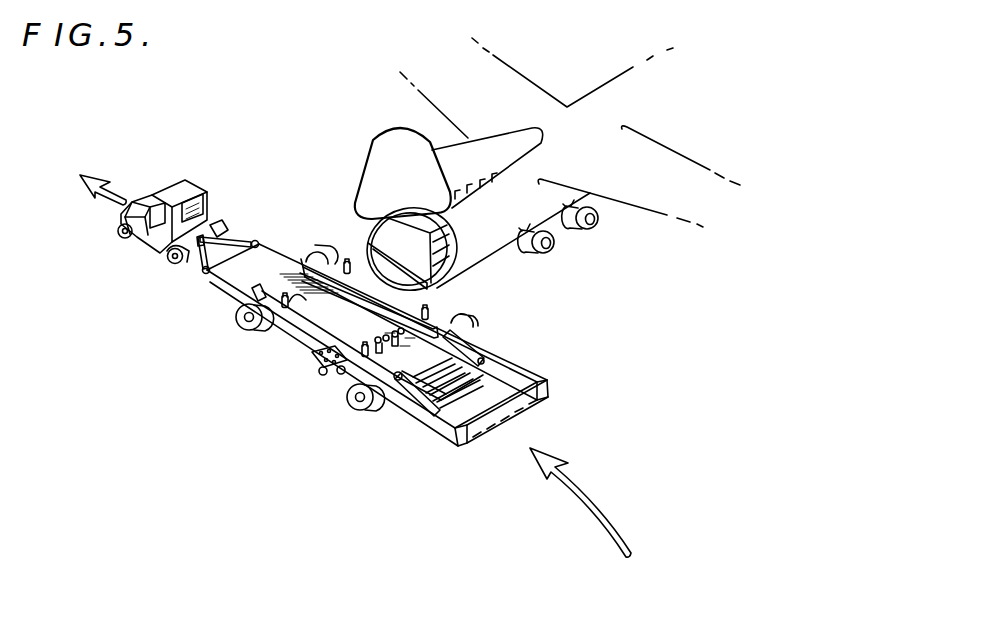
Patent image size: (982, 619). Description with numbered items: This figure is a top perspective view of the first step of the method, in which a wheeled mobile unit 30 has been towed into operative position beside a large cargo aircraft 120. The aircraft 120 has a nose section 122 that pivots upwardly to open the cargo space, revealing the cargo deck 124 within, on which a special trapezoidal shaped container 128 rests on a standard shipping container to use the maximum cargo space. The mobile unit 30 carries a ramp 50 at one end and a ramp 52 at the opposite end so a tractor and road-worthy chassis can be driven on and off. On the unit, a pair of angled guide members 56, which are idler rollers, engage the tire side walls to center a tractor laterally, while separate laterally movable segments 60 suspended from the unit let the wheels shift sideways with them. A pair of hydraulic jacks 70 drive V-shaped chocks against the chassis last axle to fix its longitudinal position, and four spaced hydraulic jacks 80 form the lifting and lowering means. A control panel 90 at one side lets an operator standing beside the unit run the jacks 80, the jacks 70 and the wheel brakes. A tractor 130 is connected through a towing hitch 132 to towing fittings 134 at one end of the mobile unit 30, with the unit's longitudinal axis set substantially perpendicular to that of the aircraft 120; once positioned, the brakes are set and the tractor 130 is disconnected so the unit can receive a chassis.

The mobile unit 30 is at (292, 341).
The ramp 50 is at (505, 400).
The ramp 52 is at (270, 278).
The guide members 56 is at (462, 352).
The segments 60 is at (440, 382).
The hydraulic jacks 70 is at (377, 340).
The hydraulic jacks 80 is at (305, 306).
The control panel 90 is at (317, 358).
The cargo aircraft 120 is at (496, 262).
The nose section 122 is at (373, 163).
The cargo deck 124 is at (430, 292).
The trapezoidal shaped container 128 is at (427, 231).
The tractor 130 is at (143, 252).
The towing hitch 132 is at (237, 232).
The towing fittings 134 is at (261, 242).